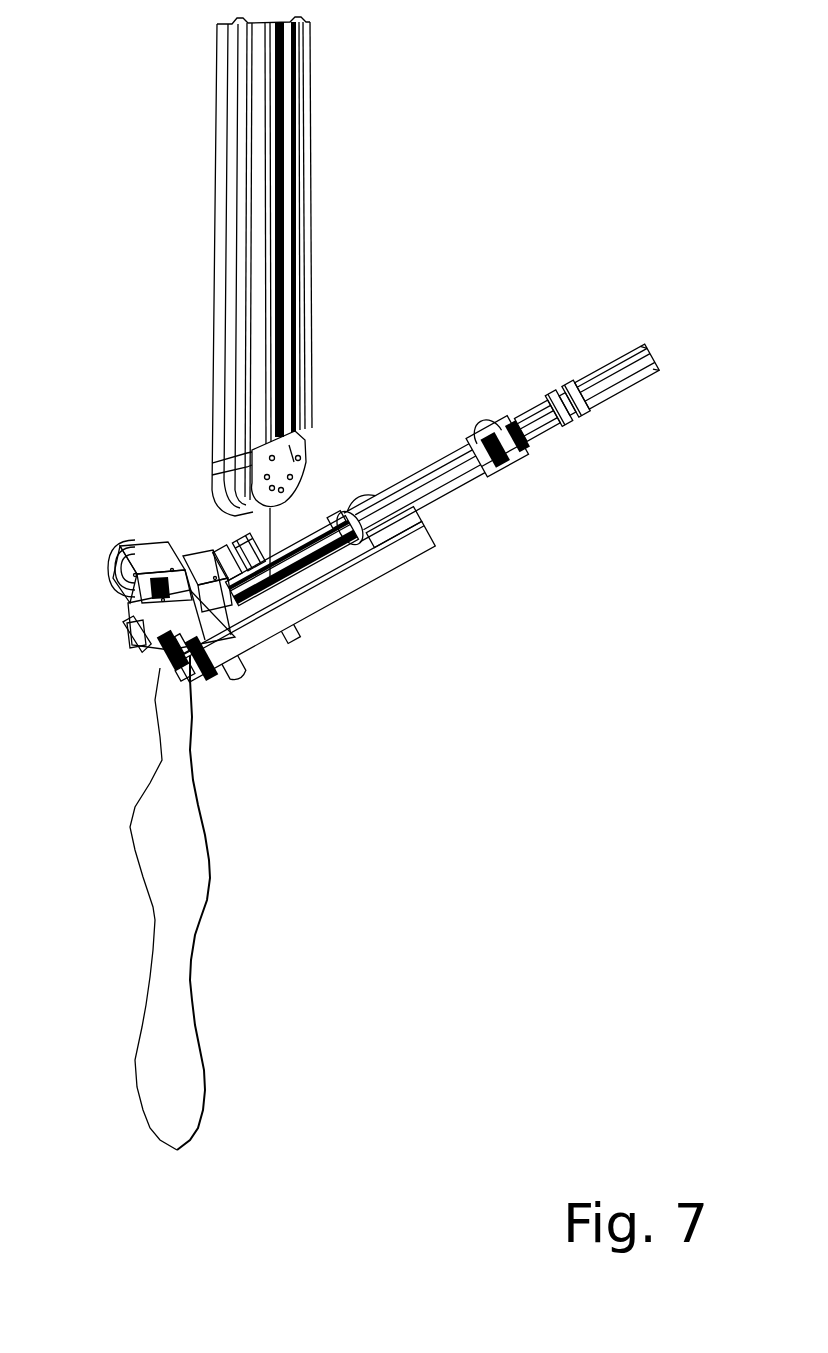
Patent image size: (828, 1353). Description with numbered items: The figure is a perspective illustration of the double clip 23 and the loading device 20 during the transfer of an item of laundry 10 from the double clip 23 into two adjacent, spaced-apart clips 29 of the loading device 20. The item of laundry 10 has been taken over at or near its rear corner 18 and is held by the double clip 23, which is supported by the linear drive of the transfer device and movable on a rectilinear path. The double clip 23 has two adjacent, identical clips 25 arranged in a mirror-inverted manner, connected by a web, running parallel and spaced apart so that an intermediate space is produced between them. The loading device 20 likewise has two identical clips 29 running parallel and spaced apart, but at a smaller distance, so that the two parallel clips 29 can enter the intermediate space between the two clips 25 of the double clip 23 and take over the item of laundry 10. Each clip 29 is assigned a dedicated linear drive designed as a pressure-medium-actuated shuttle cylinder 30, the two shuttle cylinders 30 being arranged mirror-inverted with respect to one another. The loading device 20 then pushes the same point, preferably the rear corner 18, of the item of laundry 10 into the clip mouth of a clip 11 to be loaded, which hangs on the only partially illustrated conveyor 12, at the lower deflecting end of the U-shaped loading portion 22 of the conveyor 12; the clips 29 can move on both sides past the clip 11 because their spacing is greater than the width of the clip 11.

The item of laundry 10 is at (175, 1070).
The clip 11 is at (290, 638).
The conveyor 12 is at (296, 200).
The rear corner 18 is at (243, 670).
The loading device 20 is at (370, 523).
The U-shaped loading portion 22 is at (302, 436).
The double clip 23 is at (183, 548).
The clip 25 is at (215, 560).
The clip 29 is at (192, 663).
The shuttle cylinder 30 is at (370, 515).